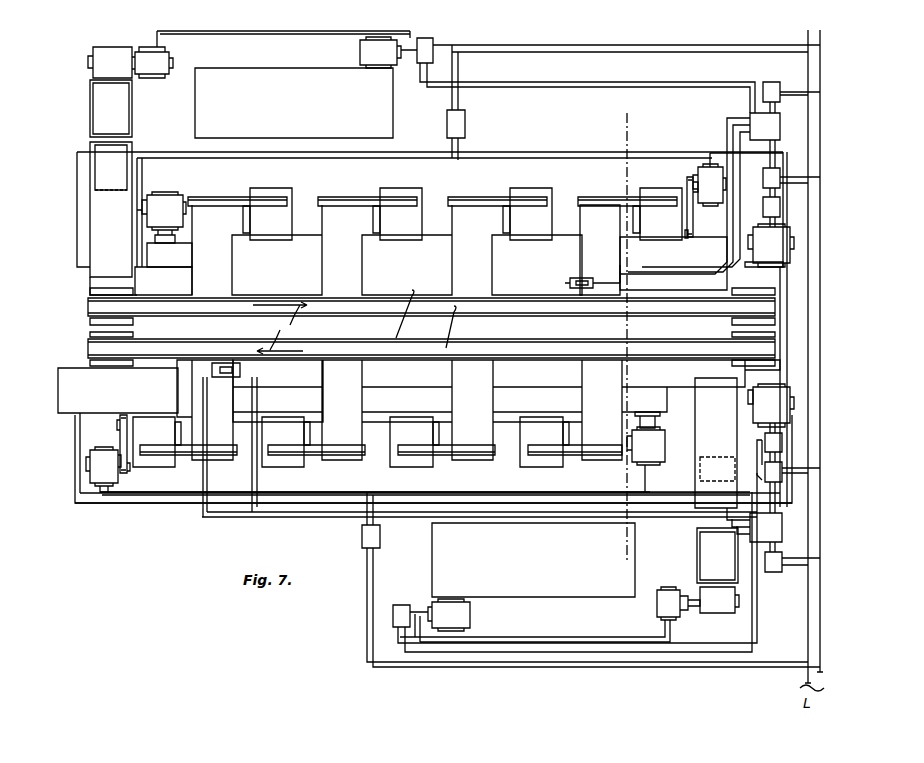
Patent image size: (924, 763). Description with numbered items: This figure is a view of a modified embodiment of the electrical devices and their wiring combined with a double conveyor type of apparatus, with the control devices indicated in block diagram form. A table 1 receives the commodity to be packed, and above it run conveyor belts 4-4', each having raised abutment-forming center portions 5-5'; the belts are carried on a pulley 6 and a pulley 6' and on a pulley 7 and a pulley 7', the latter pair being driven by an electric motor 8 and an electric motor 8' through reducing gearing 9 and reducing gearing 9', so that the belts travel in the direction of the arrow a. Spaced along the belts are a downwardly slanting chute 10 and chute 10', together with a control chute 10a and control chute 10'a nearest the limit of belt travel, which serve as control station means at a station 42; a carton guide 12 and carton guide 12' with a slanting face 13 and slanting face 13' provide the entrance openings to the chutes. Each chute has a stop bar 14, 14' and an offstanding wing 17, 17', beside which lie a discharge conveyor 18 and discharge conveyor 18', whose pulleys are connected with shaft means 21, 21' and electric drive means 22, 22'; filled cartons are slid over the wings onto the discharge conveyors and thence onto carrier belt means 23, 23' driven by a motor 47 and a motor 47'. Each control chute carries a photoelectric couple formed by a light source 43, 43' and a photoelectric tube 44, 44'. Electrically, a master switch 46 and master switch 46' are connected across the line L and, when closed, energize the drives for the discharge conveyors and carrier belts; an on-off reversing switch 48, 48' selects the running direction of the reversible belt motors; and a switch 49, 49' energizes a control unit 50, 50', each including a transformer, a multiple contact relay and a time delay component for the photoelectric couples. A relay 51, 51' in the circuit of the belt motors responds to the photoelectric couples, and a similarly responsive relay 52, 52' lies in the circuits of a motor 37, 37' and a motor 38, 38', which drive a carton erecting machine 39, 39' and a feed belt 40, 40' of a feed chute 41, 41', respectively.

The table 1 is at (72, 178).
The line L is at (814, 356).
The motor 38' is at (249, 54).
The feed belt 40' is at (92, 108).
The feed chute 41' is at (85, 209).
The carton erecting machine 39' is at (294, 90).
The motor 37' is at (373, 52).
The relay 52' is at (615, 71).
The master switch 46' is at (473, 102).
The electric motor 8 is at (708, 338).
The switch 49' is at (791, 88).
The control unit 50' is at (700, 193).
The on-off reversing switch 48' is at (791, 177).
The relay 51' is at (762, 212).
The electric motor 8' is at (754, 210).
The reducing gearing 9' is at (764, 272).
The electric drive means 22' is at (709, 169).
The shaft means 21' is at (702, 207).
The motor 47' is at (161, 208).
The carrier belt means 23' is at (147, 255).
The stop bar 14' is at (432, 189).
The discharge conveyor 18' is at (466, 205).
The offstanding wing 17' is at (421, 220).
The chute 10' is at (459, 250).
The control chute 10'a is at (621, 250).
The carton guide 12' is at (477, 310).
The slanting face 13' is at (430, 261).
The conveyor belts 4-4' is at (399, 306).
The raised abutment-forming center portions 5-5' is at (459, 327).
The photoelectric tube 44' is at (591, 268).
The light source 43' is at (575, 280).
The pulley 6' is at (412, 310).
The pulley 6 is at (412, 349).
The pulley 7' is at (790, 313).
The pulley 7 is at (788, 338).
The arrow a is at (280, 328).
The control chute 10a is at (195, 400).
The photoelectric tube 44 is at (226, 380).
The light source 43 is at (239, 443).
The station 42 is at (264, 384).
The chute 10 is at (506, 410).
The carton guide 12 is at (414, 394).
The slanting face 13 is at (491, 394).
The discharge conveyor 18 is at (348, 450).
The offstanding wing 17 is at (359, 433).
The stop bar 14 is at (381, 466).
The shaft means 21 is at (110, 444).
The electric drive means 22 is at (349, 469).
The carrier belt means 23 is at (659, 422).
The motor 47 is at (656, 460).
The feed chute 41 is at (698, 443).
The reducing gearing 9 is at (755, 387).
The relay 51 is at (762, 442).
The on-off reversing switch 48 is at (788, 477).
The control unit 50 is at (754, 530).
The switch 49 is at (792, 572).
The feed belt 40 is at (705, 570).
The motor 38 is at (550, 614).
The carton erecting machine 39 is at (533, 570).
The motor 37 is at (455, 620).
The relay 52 is at (575, 562).
The master switch 46 is at (447, 579).